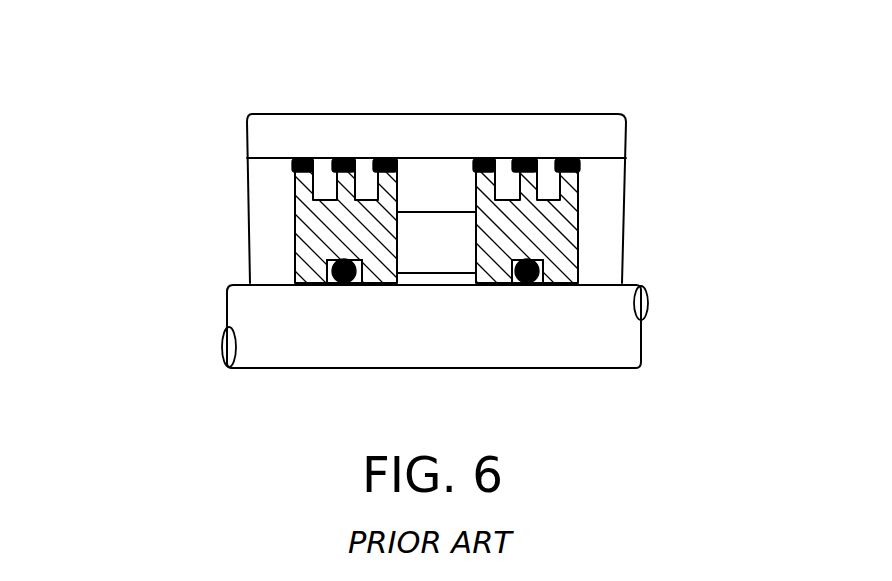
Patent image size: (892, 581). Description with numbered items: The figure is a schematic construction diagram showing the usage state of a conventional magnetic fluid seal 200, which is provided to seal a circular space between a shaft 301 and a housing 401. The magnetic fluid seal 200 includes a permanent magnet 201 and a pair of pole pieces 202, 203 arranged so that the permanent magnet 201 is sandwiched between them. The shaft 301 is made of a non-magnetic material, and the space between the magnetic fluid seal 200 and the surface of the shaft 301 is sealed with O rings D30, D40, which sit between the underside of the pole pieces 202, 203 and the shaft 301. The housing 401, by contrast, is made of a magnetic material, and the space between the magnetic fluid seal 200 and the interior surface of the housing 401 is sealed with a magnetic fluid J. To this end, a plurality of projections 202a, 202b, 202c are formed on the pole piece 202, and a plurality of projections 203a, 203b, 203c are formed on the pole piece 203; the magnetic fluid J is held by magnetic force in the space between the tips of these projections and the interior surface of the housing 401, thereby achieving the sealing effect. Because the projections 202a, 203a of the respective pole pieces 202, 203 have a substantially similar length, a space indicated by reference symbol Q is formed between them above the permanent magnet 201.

The magnetic fluid seal 200 is at (268, 205).
The permanent magnet 201 is at (430, 222).
The pole piece 202 is at (442, 164).
The projection 202a is at (379, 185).
The projection 202b is at (337, 185).
The projection 202c is at (300, 182).
The pole piece 203 is at (453, 159).
The projection 203a is at (477, 187).
The projection 203b is at (520, 185).
The projection 203c is at (578, 183).
The shaft 301 is at (645, 345).
The housing 401 is at (582, 120).
The O ring D30 is at (342, 284).
The O ring D40 is at (540, 261).
The magnetic fluid J is at (577, 158).
The space Q is at (419, 172).